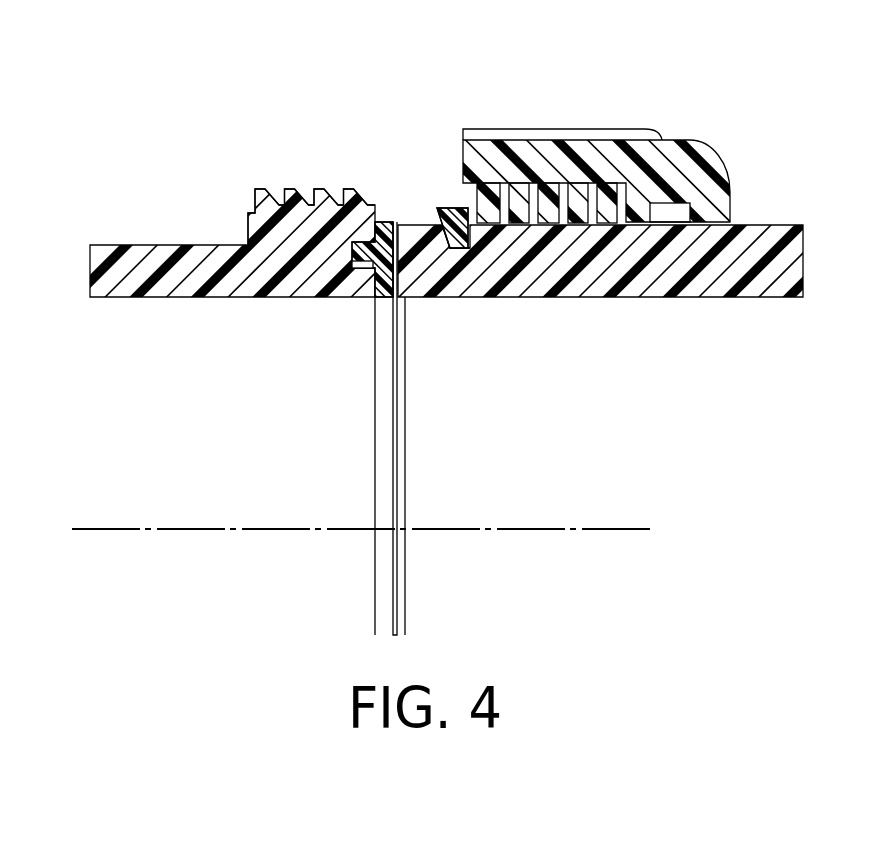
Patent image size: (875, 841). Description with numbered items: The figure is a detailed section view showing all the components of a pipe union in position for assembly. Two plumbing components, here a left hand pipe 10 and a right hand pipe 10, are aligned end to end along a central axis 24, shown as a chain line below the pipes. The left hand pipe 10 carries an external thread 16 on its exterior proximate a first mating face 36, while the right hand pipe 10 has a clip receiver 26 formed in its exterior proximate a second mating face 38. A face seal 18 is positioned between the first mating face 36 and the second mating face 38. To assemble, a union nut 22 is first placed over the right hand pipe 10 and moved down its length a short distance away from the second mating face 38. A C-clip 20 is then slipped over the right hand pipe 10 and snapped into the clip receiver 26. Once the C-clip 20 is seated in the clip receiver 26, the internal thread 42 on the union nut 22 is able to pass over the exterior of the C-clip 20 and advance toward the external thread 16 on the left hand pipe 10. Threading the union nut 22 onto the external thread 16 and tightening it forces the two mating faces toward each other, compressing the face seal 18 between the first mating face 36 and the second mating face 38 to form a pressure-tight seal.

The pipe 10 is at (437, 300).
The external thread 16 is at (291, 169).
The face seal 18 is at (324, 200).
The C-clip 20 is at (433, 200).
The union nut 22 is at (570, 200).
The central axis 24 is at (361, 475).
The clip receiver 26 is at (526, 306).
The first mating face 36 is at (320, 324).
The second mating face 38 is at (438, 428).
The internal thread 42 is at (547, 133).